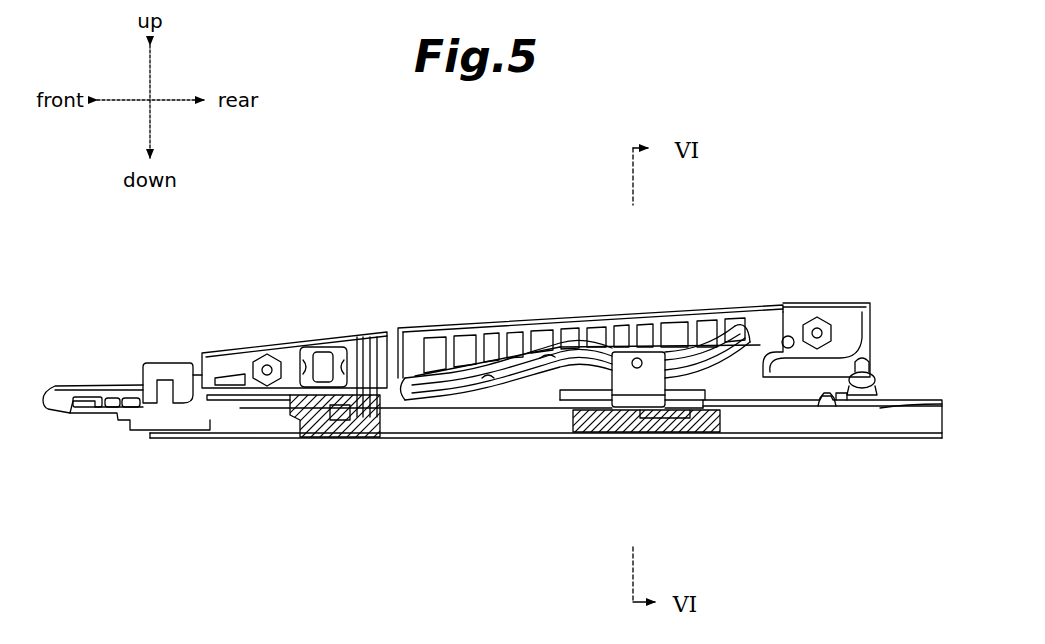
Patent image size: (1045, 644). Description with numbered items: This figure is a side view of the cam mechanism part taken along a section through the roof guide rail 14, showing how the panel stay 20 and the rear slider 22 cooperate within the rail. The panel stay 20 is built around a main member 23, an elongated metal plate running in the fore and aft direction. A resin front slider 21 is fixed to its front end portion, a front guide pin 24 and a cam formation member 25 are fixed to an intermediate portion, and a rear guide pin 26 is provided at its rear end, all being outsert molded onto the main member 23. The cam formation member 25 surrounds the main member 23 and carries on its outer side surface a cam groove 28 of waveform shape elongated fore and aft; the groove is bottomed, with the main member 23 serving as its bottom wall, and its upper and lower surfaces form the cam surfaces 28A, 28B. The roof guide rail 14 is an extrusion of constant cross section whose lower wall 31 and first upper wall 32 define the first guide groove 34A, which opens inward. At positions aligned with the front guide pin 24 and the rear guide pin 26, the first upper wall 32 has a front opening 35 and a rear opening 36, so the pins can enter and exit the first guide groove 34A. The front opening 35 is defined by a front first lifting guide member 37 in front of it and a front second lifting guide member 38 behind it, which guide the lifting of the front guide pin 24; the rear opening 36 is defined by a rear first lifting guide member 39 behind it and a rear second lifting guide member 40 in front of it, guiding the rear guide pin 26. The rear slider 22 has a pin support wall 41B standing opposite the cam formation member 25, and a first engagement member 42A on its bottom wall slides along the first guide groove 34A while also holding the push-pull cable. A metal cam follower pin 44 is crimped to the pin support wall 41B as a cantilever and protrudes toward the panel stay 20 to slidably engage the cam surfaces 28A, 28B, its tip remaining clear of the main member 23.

The roof guide rail 14 is at (566, 446).
The panel stay 20 is at (499, 310).
The front slider 21 is at (172, 372).
The rear slider 22 is at (700, 330).
The main member 23 is at (387, 328).
The front guide pin 24 is at (337, 440).
The cam formation member 25 is at (639, 330).
The rear guide pin 26 is at (838, 437).
The cam groove 28 is at (435, 440).
The cam surface 28A is at (555, 350).
The cam surface 28B is at (488, 385).
The lower wall 31 is at (628, 440).
The first upper wall 32 is at (540, 440).
The first guide groove 34A is at (765, 437).
The front opening 35 is at (345, 440).
The rear opening 36 is at (872, 437).
The front first lifting guide member 37 is at (310, 440).
The front second lifting guide member 38 is at (365, 440).
The rear first lifting guide member 39 is at (908, 437).
The rear second lifting guide member 40 is at (814, 437).
The pin support wall 41B is at (633, 357).
The first engagement member 42A is at (656, 440).
The cam follower pin 44 is at (667, 360).